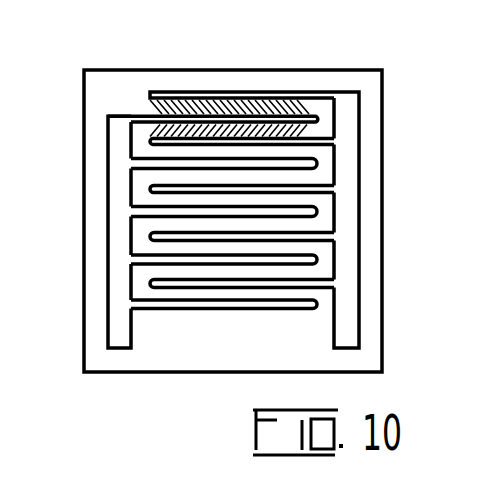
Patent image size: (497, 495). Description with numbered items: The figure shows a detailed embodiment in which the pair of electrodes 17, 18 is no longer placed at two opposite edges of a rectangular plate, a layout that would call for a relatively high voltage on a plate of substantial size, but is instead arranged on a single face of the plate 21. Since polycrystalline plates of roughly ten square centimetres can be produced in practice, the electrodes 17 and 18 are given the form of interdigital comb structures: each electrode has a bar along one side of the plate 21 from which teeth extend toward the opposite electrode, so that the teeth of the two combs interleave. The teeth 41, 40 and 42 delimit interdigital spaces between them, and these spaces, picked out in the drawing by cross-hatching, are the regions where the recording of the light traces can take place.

The plate 21 is at (150, 70).
The electrode 17 is at (133, 338).
The electrode 18 is at (335, 340).
The tooth 40 is at (328, 116).
The tooth 41 is at (150, 95).
The tooth 42 is at (152, 141).